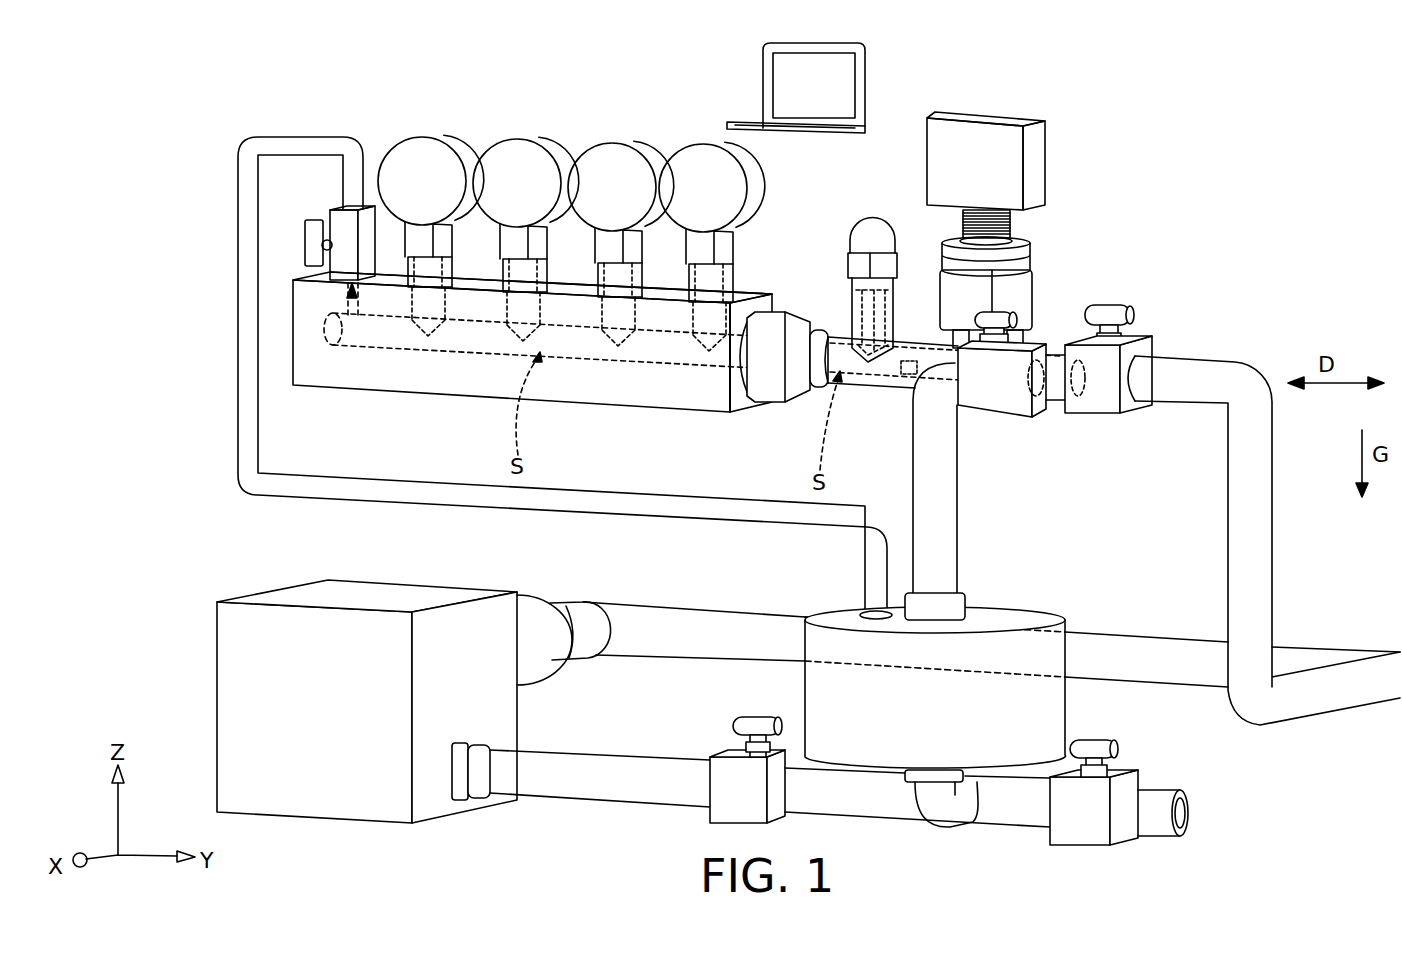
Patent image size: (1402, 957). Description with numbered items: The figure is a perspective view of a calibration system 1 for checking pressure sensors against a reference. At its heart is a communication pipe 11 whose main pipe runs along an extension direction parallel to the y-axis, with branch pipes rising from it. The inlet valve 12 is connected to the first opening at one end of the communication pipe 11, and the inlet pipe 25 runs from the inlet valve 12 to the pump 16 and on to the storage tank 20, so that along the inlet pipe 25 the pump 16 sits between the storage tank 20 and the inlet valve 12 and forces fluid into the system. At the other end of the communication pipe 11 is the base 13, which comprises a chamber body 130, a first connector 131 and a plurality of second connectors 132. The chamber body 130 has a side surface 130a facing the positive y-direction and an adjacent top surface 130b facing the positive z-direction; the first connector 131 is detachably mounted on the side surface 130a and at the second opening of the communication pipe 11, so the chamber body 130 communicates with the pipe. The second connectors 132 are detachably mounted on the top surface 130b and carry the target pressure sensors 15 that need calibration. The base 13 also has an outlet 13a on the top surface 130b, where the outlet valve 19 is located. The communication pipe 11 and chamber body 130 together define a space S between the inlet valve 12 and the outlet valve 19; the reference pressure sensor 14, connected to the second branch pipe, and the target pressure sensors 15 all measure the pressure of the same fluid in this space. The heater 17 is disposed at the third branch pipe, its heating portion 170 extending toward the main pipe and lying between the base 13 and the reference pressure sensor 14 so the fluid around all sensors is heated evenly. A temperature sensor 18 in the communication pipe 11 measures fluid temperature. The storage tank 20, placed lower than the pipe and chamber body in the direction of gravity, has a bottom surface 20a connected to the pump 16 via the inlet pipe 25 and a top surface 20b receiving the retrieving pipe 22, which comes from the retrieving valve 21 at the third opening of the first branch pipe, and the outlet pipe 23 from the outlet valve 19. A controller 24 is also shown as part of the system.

The calibration system 1 is at (1357, 62).
The communication pipe 11 is at (856, 395).
The inlet valve 12 is at (1140, 348).
The base 13 is at (437, 405).
The outlet 13a is at (352, 300).
The chamber body 130 is at (574, 397).
The side surface 130a is at (748, 402).
The top surface 130b is at (661, 278).
The first connector 131 is at (738, 322).
The second connectors 132 is at (418, 283).
The reference pressure sensor 14 is at (1040, 143).
The target pressure sensors 15 is at (419, 147).
The pump 16 is at (330, 790).
The heater 17 is at (848, 213).
The heating portion 170 is at (888, 314).
The temperature sensor 18 is at (902, 374).
The outlet valve 19 is at (329, 212).
The storage tank 20 is at (1062, 712).
The bottom surface 20a is at (1007, 788).
The top surface 20b is at (1016, 603).
The retrieving valve 21 is at (1022, 412).
The retrieving pipe 22 is at (945, 468).
The outlet pipe 23 is at (557, 500).
The controller 24 is at (763, 67).
The inlet pipe 25 is at (1196, 395).